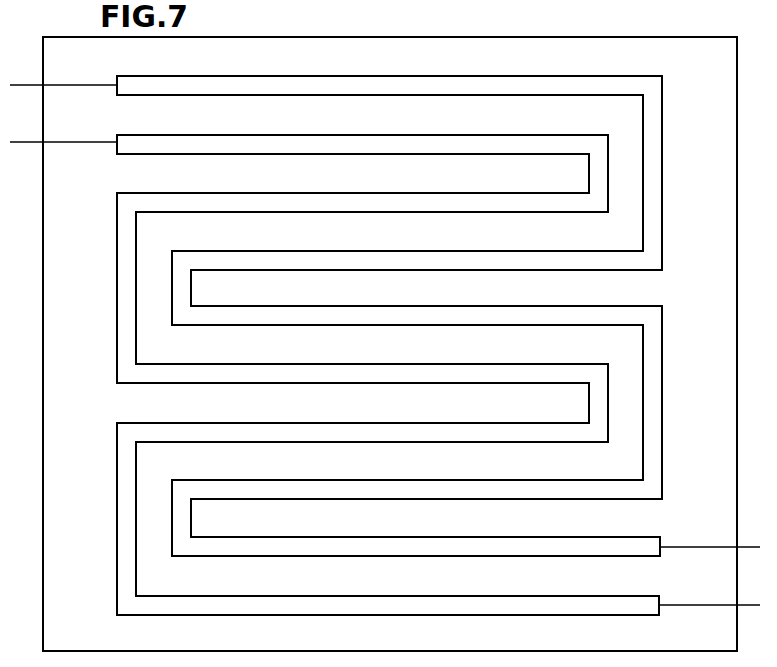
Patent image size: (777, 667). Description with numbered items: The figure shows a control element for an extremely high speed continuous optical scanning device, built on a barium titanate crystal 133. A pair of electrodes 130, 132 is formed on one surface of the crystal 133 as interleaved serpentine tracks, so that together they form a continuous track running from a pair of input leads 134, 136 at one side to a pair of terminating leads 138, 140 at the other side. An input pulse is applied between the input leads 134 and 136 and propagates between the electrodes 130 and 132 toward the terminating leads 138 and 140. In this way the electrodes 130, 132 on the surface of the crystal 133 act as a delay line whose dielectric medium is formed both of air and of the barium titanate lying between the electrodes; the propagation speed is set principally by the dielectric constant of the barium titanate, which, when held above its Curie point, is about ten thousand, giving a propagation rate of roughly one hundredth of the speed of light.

The electrode 130 is at (354, 76).
The electrode 132 is at (325, 136).
The crystal 133 is at (518, 38).
The input lead 134 is at (82, 85).
The input lead 136 is at (84, 142).
The terminating lead 138 is at (698, 547).
The terminating lead 140 is at (697, 605).